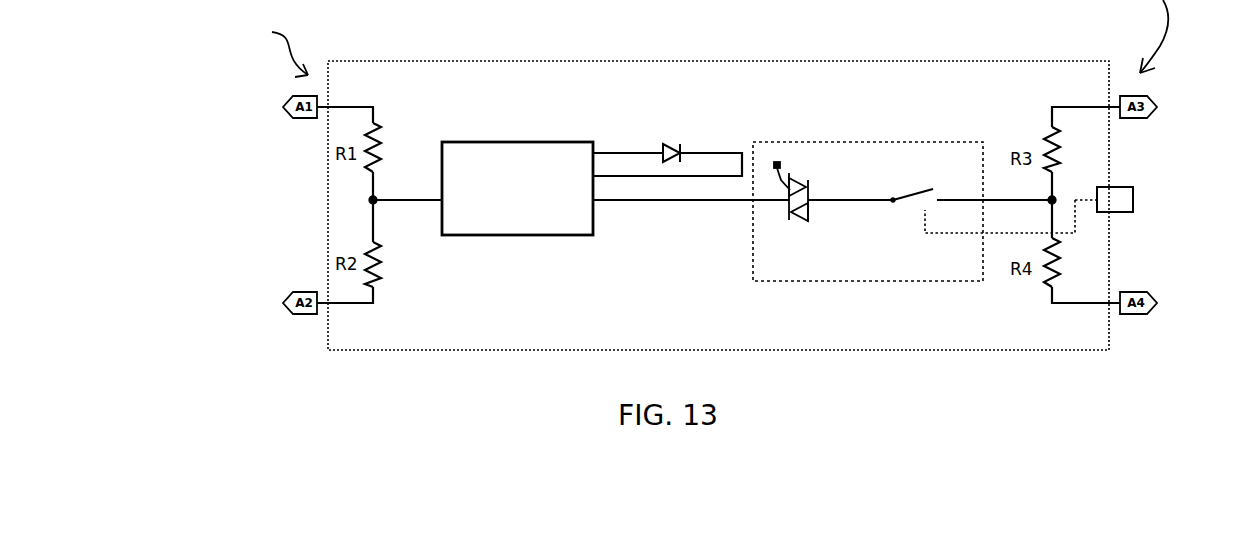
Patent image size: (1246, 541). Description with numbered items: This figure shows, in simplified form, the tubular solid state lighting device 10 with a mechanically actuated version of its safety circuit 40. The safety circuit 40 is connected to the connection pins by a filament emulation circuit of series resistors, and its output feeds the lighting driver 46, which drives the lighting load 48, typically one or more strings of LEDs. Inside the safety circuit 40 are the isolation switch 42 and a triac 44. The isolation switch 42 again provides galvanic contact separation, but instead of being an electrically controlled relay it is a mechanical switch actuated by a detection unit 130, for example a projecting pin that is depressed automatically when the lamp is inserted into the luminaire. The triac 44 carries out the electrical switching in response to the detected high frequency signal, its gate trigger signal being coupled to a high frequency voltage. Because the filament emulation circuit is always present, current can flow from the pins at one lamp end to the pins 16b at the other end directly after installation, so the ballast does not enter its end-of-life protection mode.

The tubular solid state lighting device 10 is at (447, 61).
The second pair of electrical connection pins 16b is at (269, 48).
The safety circuit 40 is at (865, 142).
The isolation switch 42 is at (930, 190).
The triac 44 is at (806, 178).
The lighting driver 46 is at (525, 142).
The lighting load 48 is at (668, 144).
The detection unit 130 is at (1133, 196).